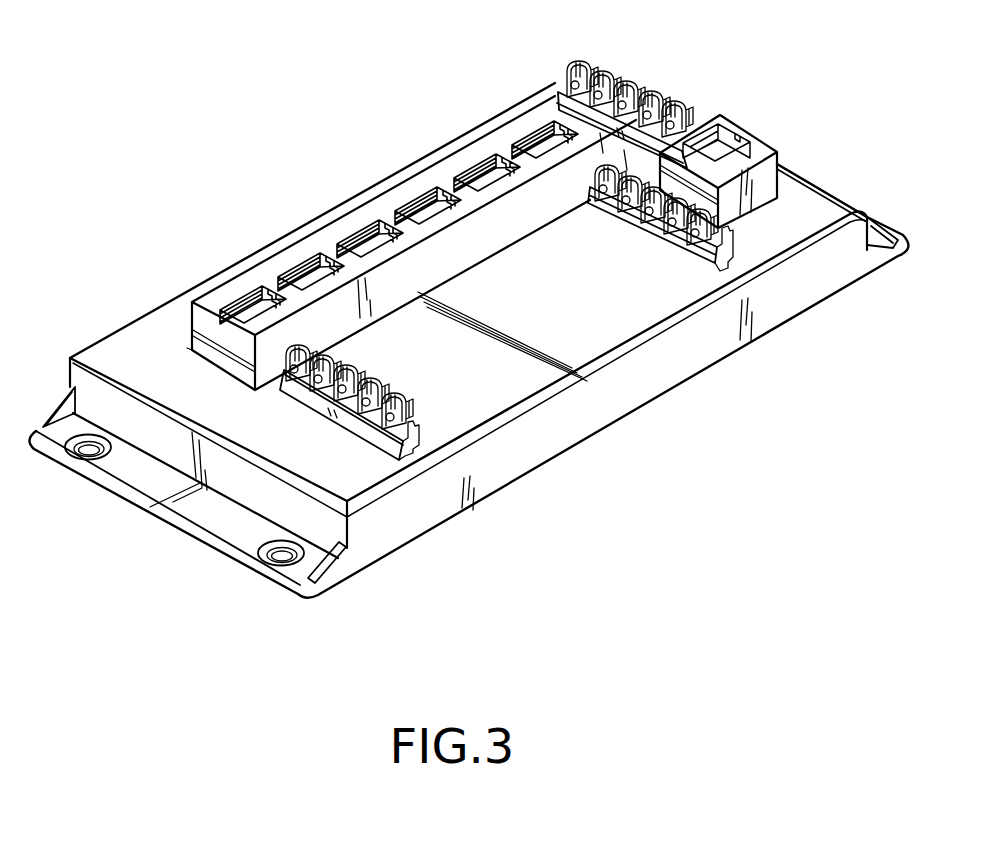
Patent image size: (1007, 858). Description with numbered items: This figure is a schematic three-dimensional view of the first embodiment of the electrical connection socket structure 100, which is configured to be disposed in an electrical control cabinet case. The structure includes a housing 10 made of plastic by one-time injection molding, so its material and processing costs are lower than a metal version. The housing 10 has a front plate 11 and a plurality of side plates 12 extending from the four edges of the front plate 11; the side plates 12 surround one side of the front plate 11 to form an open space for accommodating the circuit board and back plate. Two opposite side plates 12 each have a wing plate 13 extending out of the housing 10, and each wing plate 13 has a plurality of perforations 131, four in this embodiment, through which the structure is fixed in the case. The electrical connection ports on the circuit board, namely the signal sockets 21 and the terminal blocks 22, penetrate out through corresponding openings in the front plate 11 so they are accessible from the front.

The electrical connection socket structure 100 is at (190, 124).
The housing 10 is at (606, 514).
The front plate 11 is at (557, 350).
The side plates 12 is at (560, 430).
The wing plate 13 is at (155, 487).
The perforations 131 is at (277, 548).
The signal sockets 21 is at (444, 173).
The terminal blocks 22 is at (611, 82).